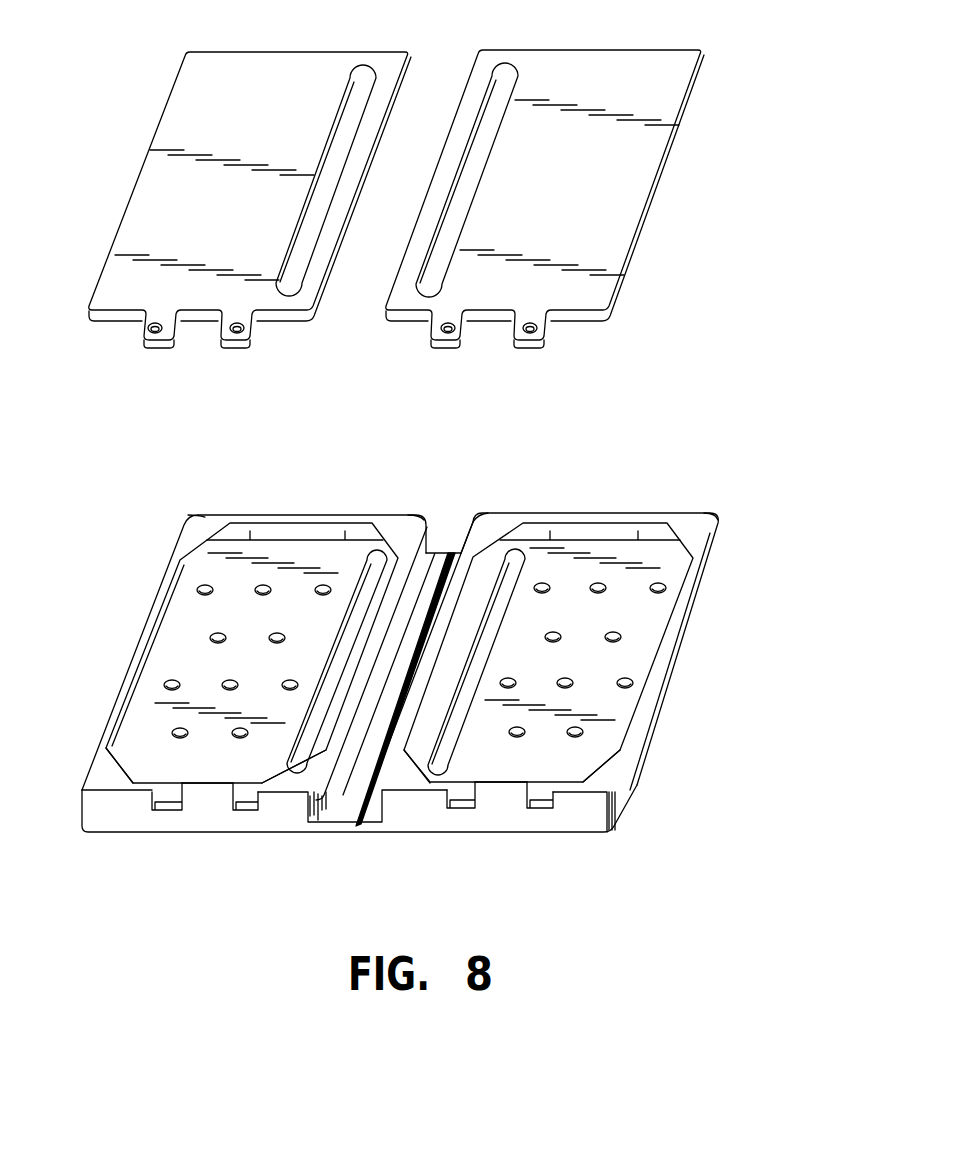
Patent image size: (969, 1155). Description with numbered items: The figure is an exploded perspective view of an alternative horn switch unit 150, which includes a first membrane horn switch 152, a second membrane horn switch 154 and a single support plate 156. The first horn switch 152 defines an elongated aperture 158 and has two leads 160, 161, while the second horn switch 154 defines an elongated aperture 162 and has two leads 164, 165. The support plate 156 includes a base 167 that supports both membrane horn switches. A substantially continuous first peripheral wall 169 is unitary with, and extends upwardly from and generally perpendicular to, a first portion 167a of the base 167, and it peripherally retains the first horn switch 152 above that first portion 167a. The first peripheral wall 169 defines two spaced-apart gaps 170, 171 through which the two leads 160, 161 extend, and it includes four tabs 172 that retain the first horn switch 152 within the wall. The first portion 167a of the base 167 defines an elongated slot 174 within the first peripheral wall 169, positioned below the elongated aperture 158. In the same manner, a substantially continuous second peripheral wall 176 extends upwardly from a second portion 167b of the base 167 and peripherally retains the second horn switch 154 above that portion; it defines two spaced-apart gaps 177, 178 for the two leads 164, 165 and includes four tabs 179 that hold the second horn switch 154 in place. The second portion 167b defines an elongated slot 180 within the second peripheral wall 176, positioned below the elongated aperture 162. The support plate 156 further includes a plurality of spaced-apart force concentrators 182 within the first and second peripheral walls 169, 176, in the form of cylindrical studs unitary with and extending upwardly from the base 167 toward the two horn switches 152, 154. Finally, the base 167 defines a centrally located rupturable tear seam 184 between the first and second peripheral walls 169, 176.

The horn switch unit 150 is at (790, 40).
The first membrane horn switch 152 is at (249, 57).
The second membrane horn switch 154 is at (584, 48).
The support plate 156 is at (369, 833).
The elongated aperture 158 is at (332, 138).
The lead 160 is at (170, 343).
The lead 161 is at (253, 343).
The elongated aperture 162 is at (482, 178).
The lead 164 is at (460, 343).
The lead 165 is at (545, 343).
The base 167 is at (442, 556).
The first portion of the base 167a is at (142, 722).
The second portion of the base 167b is at (662, 625).
The first peripheral wall 169 is at (300, 515).
The gap 170 is at (158, 807).
The gap 171 is at (243, 807).
The tab 172 is at (207, 518).
The elongated slot 174 is at (338, 638).
The second peripheral wall 176 is at (587, 513).
The gap 177 is at (477, 805).
The gap 178 is at (532, 805).
The tab 179 is at (490, 515).
The elongated slot 180 is at (505, 622).
The force concentrator 182 is at (198, 589).
The rupturable tear seam 184 is at (345, 822).